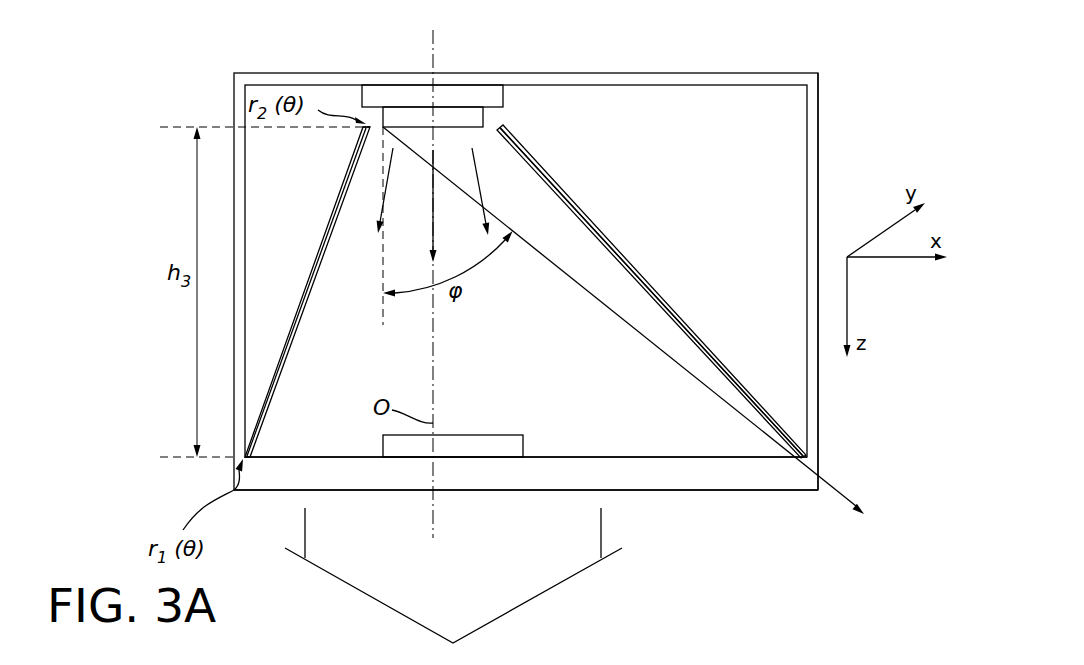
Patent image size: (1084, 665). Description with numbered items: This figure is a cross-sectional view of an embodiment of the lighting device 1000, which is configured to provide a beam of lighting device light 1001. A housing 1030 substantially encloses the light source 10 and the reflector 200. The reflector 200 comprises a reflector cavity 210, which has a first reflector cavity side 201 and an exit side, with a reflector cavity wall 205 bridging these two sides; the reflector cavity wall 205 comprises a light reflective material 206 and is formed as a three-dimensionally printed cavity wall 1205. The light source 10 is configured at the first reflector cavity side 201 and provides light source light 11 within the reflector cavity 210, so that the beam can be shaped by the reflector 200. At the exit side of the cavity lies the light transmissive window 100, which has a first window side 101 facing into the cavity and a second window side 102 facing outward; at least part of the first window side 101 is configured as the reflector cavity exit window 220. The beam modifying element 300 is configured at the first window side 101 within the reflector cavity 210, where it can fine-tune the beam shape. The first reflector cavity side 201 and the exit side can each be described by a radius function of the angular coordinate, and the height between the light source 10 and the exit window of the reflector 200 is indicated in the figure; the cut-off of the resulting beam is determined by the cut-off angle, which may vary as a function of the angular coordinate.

The lighting device 1000 is at (166, 45).
The light transmissive window 100 is at (123, 475).
The housing 1030 is at (812, 95).
The first window side 101 is at (606, 457).
The second window side 102 is at (725, 490).
The light source 10 is at (448, 120).
The light source light 11 is at (478, 178).
The beam modifying element 300 is at (516, 412).
The reflector 200 is at (454, 244).
The reflector cavity 210 is at (335, 215).
The first reflector cavity side 201 is at (370, 127).
The reflector cavity wall 205 is at (592, 220).
The light reflective material 206 is at (652, 292).
The 3D-printed cavity wall 1205 is at (323, 238).
The reflector cavity exit window 220 is at (782, 539).
The lighting device light 1001 is at (557, 583).